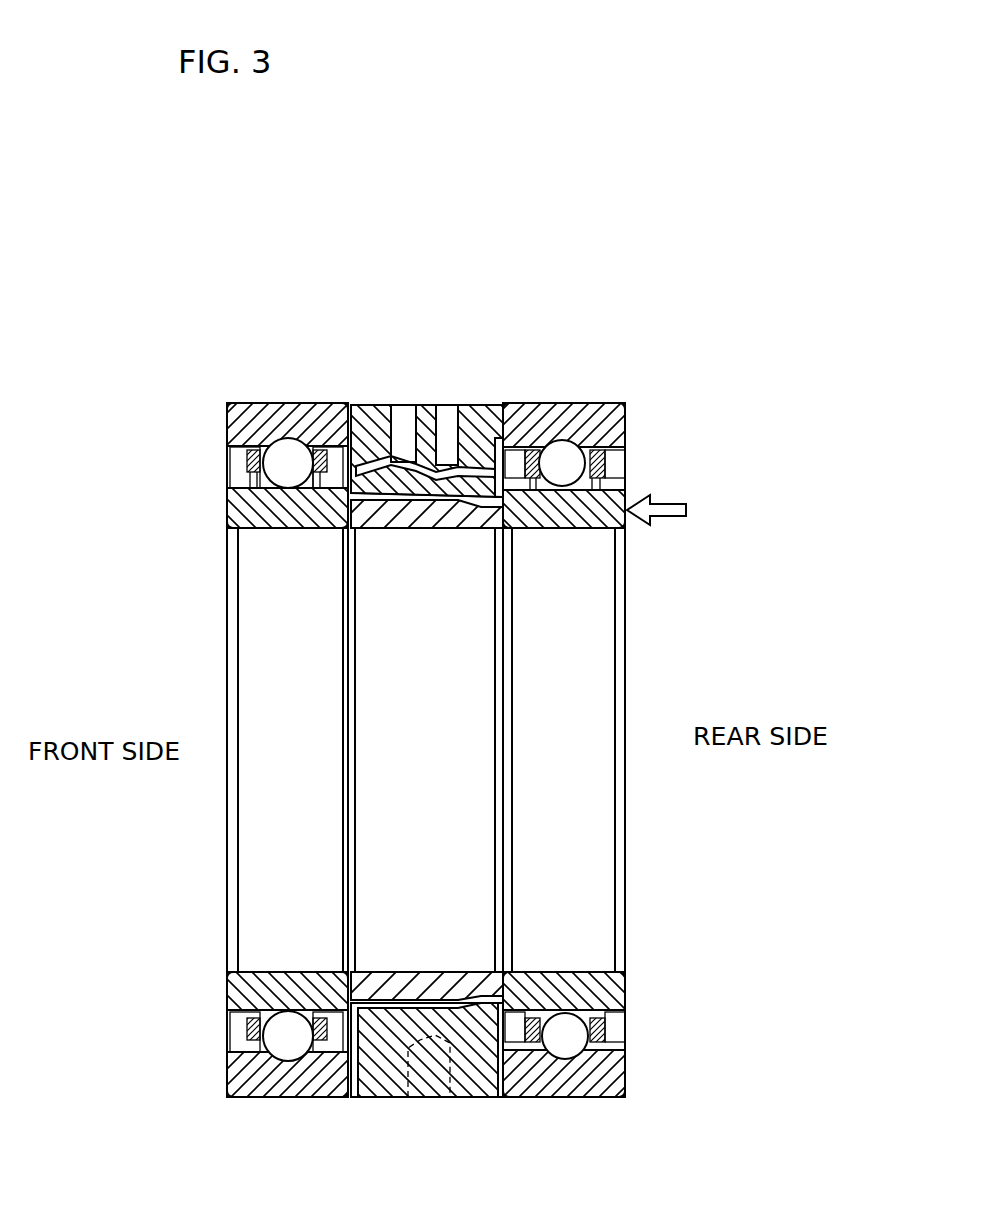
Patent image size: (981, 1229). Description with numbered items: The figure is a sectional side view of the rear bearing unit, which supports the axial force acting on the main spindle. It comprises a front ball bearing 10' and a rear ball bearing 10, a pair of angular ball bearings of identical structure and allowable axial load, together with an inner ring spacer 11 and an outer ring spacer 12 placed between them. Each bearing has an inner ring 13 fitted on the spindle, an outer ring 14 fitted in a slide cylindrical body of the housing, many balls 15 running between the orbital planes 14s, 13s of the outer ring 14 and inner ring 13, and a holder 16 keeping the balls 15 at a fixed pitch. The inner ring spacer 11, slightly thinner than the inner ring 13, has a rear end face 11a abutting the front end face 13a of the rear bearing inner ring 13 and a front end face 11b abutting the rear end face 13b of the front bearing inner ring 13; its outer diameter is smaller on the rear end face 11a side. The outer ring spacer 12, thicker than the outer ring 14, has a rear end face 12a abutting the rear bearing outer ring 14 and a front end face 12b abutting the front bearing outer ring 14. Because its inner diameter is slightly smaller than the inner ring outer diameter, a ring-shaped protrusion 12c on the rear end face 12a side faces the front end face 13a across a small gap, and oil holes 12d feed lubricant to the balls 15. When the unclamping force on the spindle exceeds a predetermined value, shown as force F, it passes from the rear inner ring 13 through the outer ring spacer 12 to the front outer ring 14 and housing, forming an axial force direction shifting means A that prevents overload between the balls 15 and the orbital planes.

The rear ball bearing 10 is at (611, 729).
The front ball bearing 10' is at (265, 706).
The inner ring spacer 11 is at (425, 533).
The rear end face 11a is at (507, 527).
The front end face 11b is at (300, 490).
The outer ring spacer 12 is at (421, 400).
The rear end face 12a is at (508, 403).
The front end face 12b is at (325, 403).
The protrusion 12c is at (533, 537).
The oil hole 12d is at (408, 403).
The inner ring 13 is at (283, 533).
The front end face 13a is at (478, 527).
The rear end face 13b is at (372, 527).
The orbital plane 13s is at (315, 530).
The outer ring 14 is at (296, 401).
The orbital plane 14s is at (283, 440).
The balls 15 is at (567, 478).
The holder 16 is at (607, 460).
The axial force direction shifting means A is at (524, 573).
The preload force F is at (671, 510).